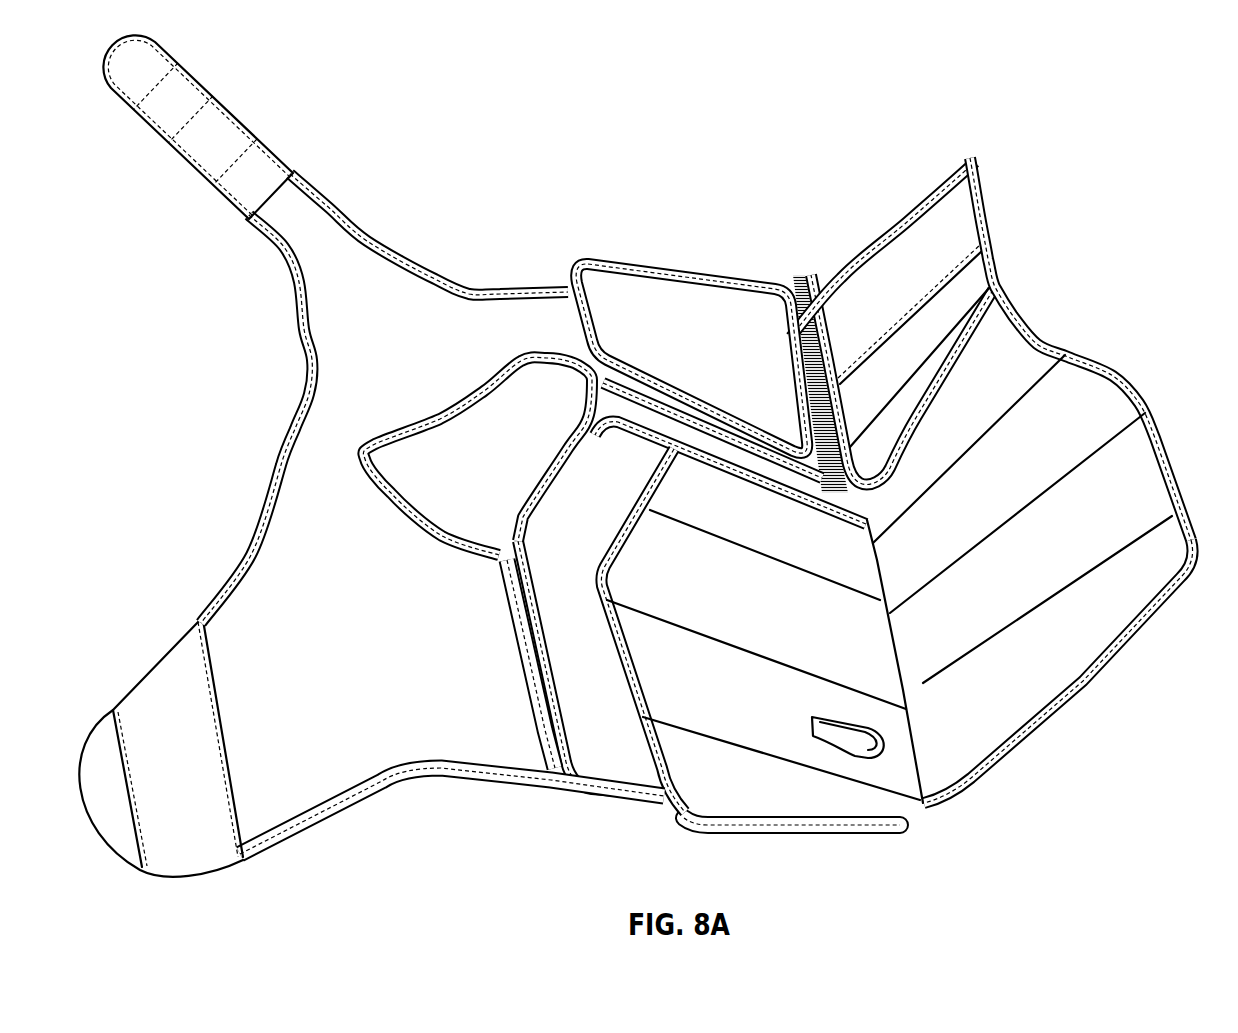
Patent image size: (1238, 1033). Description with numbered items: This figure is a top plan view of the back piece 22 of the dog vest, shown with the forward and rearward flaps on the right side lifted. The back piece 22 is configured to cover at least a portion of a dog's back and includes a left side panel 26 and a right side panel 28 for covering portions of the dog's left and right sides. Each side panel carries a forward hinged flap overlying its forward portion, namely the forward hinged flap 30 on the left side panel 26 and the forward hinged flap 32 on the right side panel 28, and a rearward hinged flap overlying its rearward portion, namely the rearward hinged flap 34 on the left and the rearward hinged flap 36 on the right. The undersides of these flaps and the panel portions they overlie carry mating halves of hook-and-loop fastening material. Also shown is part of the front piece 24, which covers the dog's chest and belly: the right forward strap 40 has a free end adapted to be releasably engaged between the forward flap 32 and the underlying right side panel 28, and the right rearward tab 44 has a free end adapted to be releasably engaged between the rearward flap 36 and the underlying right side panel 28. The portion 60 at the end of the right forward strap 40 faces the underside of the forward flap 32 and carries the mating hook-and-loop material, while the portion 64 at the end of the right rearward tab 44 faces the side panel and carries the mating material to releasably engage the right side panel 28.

The back piece 22 is at (1032, 311).
The front piece 24 is at (272, 465).
The left side panel 26 is at (645, 808).
The right side panel 28 is at (1158, 653).
The forward hinged flap 30 is at (737, 357).
The forward hinged flap 32 is at (898, 215).
The rearward hinged flap 34 is at (597, 695).
The rearward hinged flap 36 is at (760, 787).
The right forward strap 40 is at (354, 294).
The right rearward tab 44 is at (273, 741).
The portion of end of right forward strap 60 is at (227, 128).
The portion of end of right rearward tab 64 is at (195, 786).